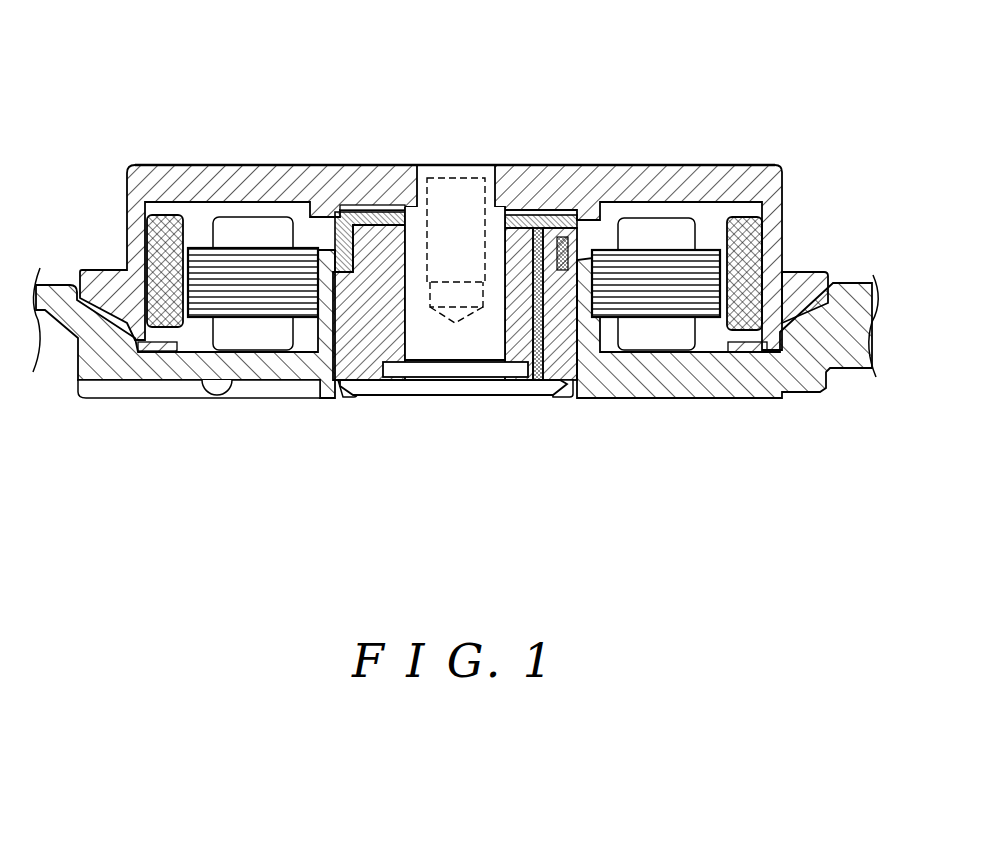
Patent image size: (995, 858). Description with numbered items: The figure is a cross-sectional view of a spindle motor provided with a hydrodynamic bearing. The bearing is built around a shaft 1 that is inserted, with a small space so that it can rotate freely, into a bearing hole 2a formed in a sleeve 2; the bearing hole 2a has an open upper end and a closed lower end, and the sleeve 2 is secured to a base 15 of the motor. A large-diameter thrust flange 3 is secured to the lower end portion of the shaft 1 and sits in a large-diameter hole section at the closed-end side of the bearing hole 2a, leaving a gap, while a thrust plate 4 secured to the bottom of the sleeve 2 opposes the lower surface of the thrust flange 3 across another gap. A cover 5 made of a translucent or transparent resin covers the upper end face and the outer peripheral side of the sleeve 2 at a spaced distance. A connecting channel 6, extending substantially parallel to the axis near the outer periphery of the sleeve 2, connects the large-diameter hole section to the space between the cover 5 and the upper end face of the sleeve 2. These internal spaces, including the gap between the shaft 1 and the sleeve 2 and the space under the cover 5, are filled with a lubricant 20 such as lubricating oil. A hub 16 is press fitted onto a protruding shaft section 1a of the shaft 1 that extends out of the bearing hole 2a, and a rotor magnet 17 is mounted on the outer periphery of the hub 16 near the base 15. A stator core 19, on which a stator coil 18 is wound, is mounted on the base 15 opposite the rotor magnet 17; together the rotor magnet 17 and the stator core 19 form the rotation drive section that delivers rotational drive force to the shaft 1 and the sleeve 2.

The shaft 1 is at (437, 180).
The protruding shaft section 1a is at (457, 197).
The sleeve 2 is at (338, 368).
The bearing hole 2a is at (403, 262).
The large-diameter thrust flange 3 is at (417, 367).
The thrust plate 4 is at (463, 387).
The cover 5 is at (340, 212).
The connecting channel 6 is at (540, 313).
The base 15 is at (713, 380).
The hub 16 is at (668, 232).
The rotor magnet 17 is at (782, 250).
The stator coil 18 is at (702, 200).
The stator core 19 is at (642, 278).
The lubricant 20 is at (523, 227).